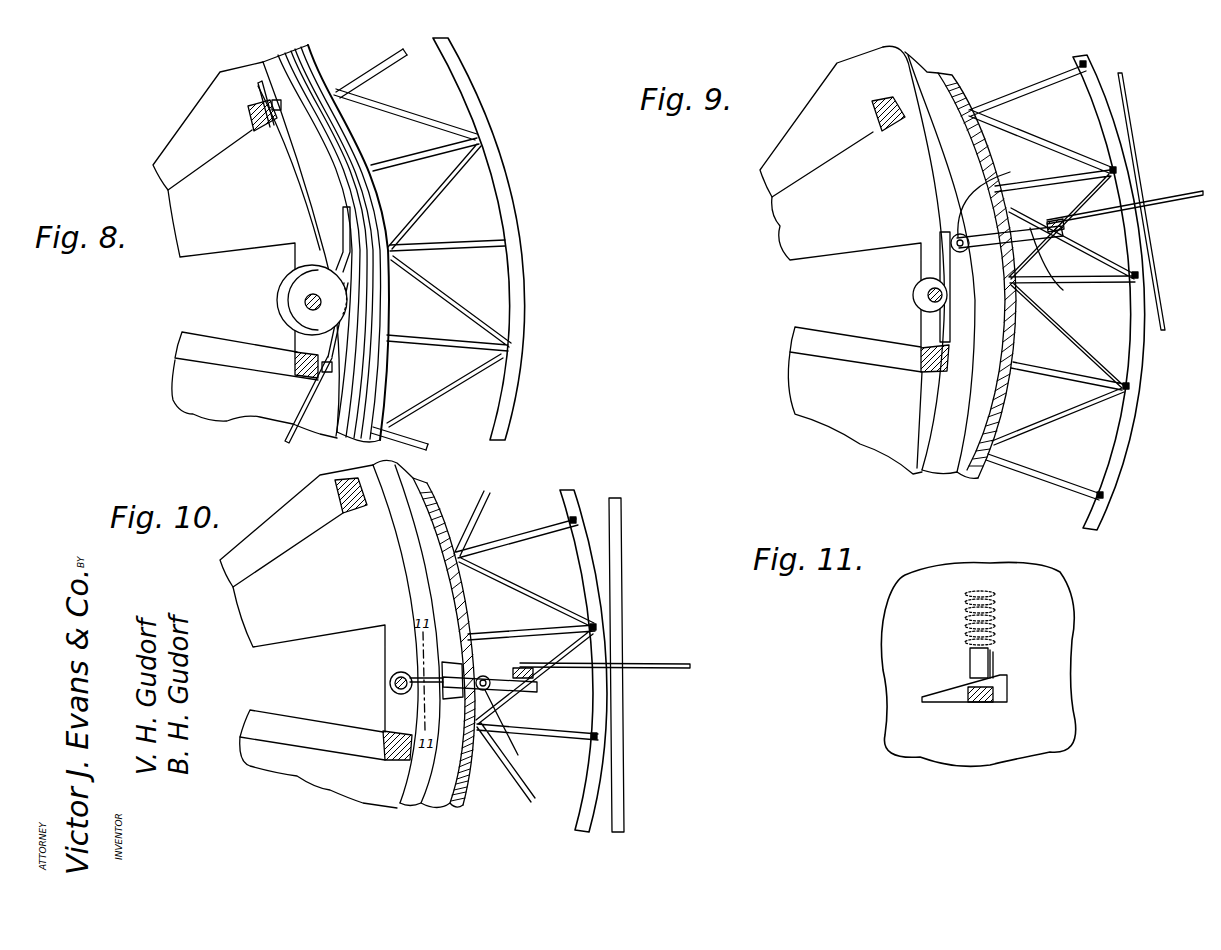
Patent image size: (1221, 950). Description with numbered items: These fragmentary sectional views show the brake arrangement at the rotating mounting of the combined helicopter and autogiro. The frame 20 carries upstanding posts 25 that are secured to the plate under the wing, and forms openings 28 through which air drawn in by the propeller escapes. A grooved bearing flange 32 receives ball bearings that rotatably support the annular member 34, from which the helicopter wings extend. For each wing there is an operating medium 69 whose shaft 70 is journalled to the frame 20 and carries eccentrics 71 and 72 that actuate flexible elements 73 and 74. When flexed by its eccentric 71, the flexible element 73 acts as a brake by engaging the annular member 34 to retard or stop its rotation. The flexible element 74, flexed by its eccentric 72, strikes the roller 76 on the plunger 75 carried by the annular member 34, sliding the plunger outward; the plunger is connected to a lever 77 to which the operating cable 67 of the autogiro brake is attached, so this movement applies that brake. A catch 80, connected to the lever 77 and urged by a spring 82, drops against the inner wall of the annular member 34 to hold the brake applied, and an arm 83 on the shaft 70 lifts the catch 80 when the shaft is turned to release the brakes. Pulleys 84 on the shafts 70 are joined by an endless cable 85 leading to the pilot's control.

In FIG. 8, the frame 20 is at (185, 339).
In FIG. 9, the frame 20 is at (852, 358).
In FIG. 10, the frame 20 is at (268, 557).
In FIG. 8, the upstanding posts 25 is at (246, 110).
In FIG. 9, the upstanding posts 25 is at (872, 106).
In FIG. 10, the upstanding posts 25 is at (358, 512).
In FIG. 8, the openings 28 is at (227, 252).
In FIG. 9, the openings 28 is at (832, 255).
In FIG. 10, the openings 28 is at (283, 645).
In FIG. 8, the bearing flange 32 is at (366, 198).
In FIG. 8, the annular member 34 is at (394, 328).
In FIG. 9, the annular member 34 is at (1000, 395).
In FIG. 10, the annular member 34 is at (465, 618).
In FIG. 11, the annular member 34 is at (1060, 602).
In FIG. 9, the operating cable 67 is at (1180, 205).
In FIG. 10, the operating cable 67 is at (642, 672).
In FIG. 8, the operating medium 69 is at (312, 301).
In FIG. 9, the operating medium 69 is at (928, 296).
In FIG. 10, the operating medium 69 is at (398, 672).
In FIG. 9, the shaft 70 is at (935, 300).
In FIG. 10, the shaft 70 is at (392, 683).
In FIG. 8, the eccentric 71 is at (285, 273).
In FIG. 9, the eccentric 72 is at (916, 283).
In FIG. 8, the flexible element 73 is at (412, 238).
In FIG. 9, the flexible element 74 is at (940, 258).
In FIG. 9, the plunger 75 is at (1064, 267).
In FIG. 9, the roller 76 is at (996, 192).
In FIG. 9, the lever 77 is at (1070, 230).
In FIG. 10, the lever 77 is at (537, 687).
In FIG. 10, the catch 80 is at (500, 680).
In FIG. 11, the catch 80 is at (968, 663).
In FIG. 10, the spring 82 is at (516, 731).
In FIG. 11, the spring 82 is at (984, 587).
In FIG. 10, the arm 83 is at (420, 690).
In FIG. 11, the arm 83 is at (964, 712).
In FIG. 8, the pulley 84 is at (300, 321).
In FIG. 8, the endless cable 85 is at (296, 170).